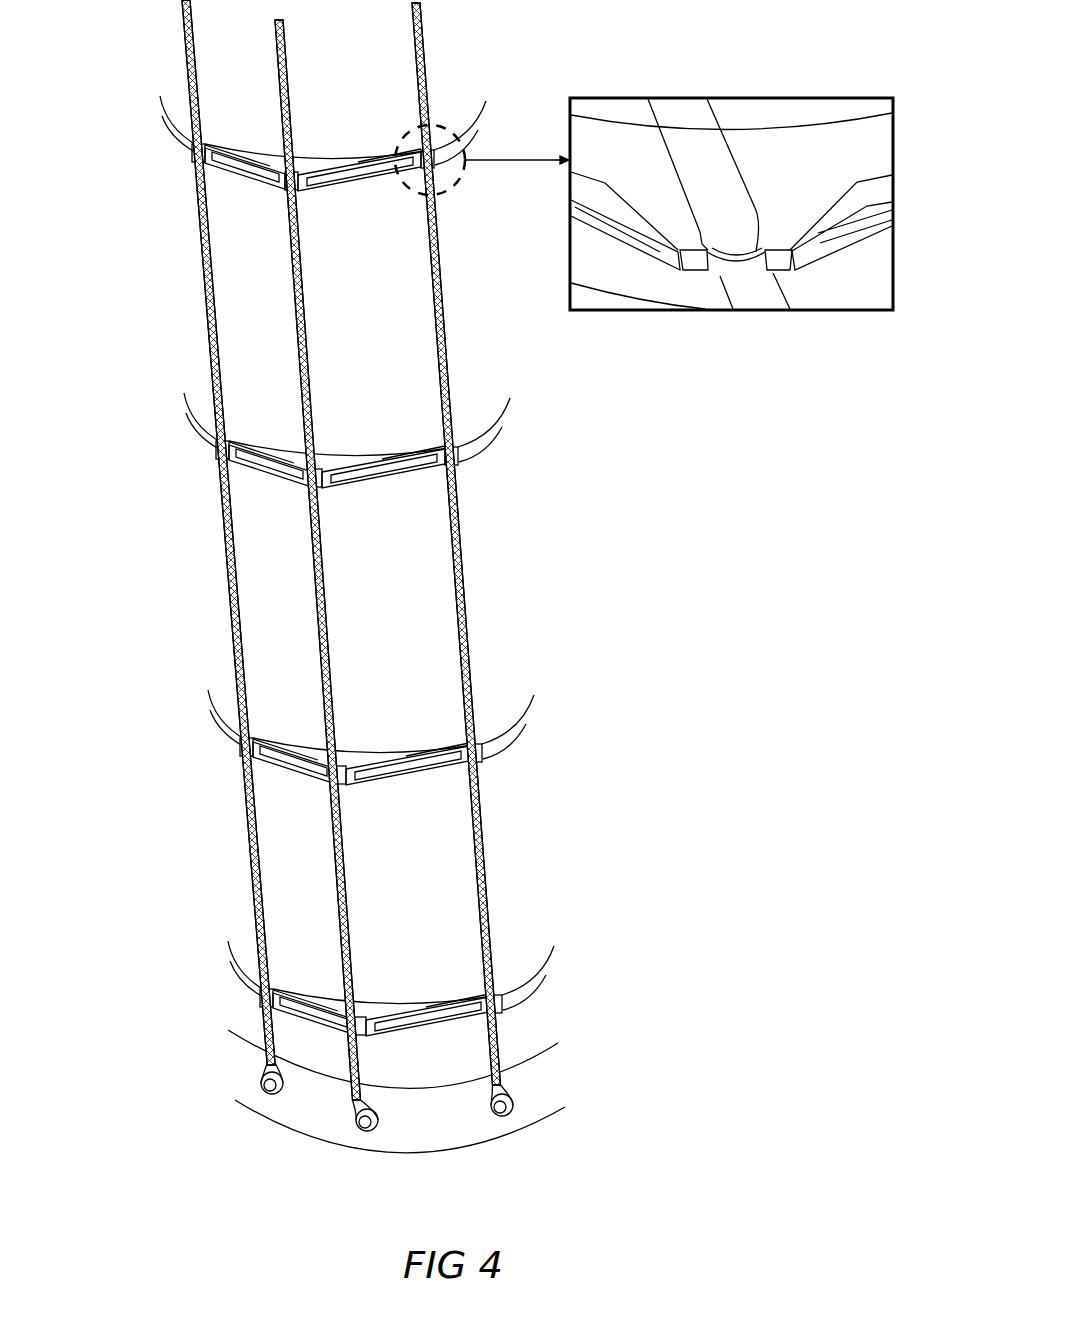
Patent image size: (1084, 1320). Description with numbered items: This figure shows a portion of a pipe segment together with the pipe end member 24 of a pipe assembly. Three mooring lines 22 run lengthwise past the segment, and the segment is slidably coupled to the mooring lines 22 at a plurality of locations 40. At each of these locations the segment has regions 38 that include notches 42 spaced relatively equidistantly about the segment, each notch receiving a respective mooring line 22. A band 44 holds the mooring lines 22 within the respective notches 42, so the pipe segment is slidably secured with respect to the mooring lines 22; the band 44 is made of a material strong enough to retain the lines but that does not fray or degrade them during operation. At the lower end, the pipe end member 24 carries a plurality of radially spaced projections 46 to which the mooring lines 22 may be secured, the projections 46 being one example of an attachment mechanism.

The mooring lines 22 is at (250, 836).
The pipe end member 24 is at (545, 1082).
The regions 38 is at (477, 132).
The locations 40 is at (207, 405).
The notches 42 is at (694, 242).
The band 44 is at (733, 267).
The projections 46 is at (362, 1124).